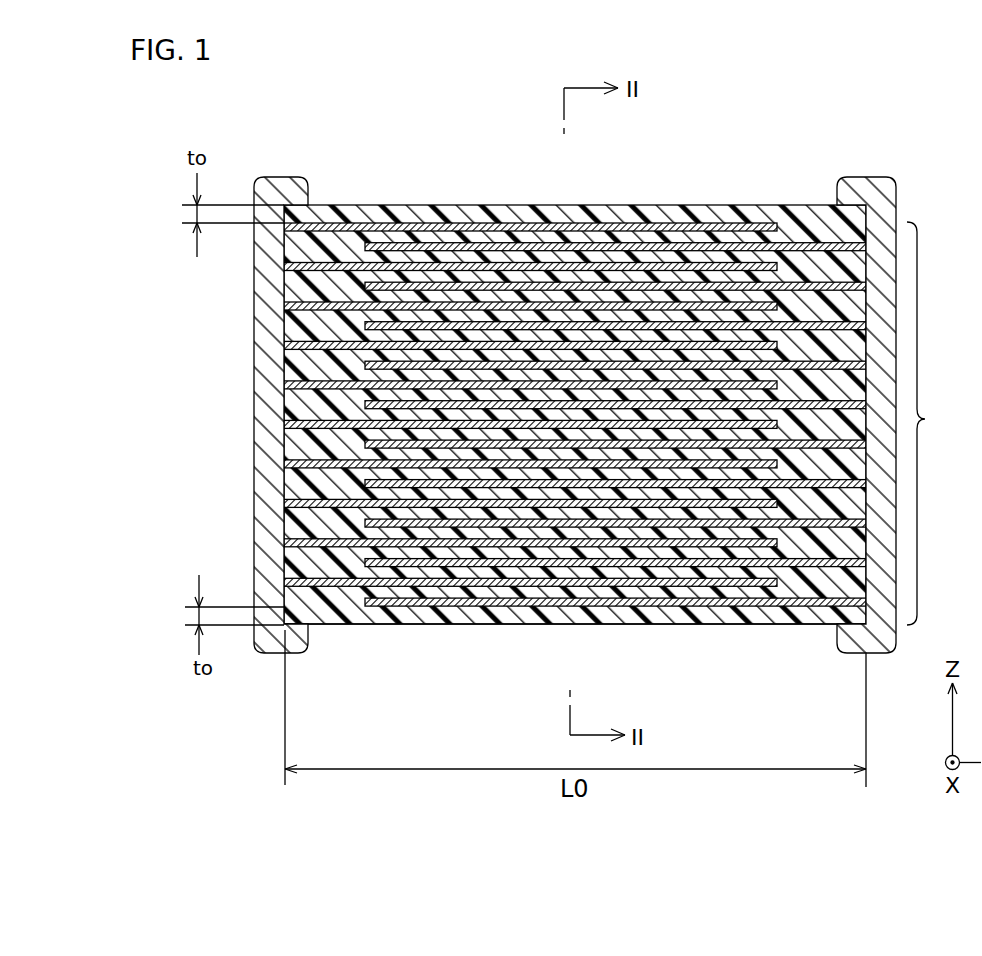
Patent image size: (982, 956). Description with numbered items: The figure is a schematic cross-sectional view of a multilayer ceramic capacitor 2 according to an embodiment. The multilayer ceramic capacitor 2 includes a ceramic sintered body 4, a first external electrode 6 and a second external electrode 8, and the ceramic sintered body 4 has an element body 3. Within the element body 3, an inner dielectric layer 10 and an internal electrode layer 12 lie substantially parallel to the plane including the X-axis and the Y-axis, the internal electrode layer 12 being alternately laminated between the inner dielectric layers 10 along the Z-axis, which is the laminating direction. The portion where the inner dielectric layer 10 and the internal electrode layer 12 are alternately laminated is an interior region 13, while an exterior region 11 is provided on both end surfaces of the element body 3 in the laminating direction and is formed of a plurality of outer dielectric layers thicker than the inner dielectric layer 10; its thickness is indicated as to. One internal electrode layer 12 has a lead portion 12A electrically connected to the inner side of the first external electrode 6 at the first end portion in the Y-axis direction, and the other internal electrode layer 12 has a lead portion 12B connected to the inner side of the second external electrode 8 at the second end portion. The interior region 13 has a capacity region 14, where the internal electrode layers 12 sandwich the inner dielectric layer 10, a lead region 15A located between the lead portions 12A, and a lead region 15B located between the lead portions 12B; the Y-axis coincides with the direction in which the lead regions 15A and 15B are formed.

The multilayer ceramic capacitor 2 is at (569, 428).
The element body 3 is at (569, 419).
The ceramic sintered body 4 is at (710, 628).
The first external electrode 6 is at (270, 503).
The second external electrode 8 is at (867, 180).
The inner dielectric layer 10 is at (518, 224).
The exterior region 11 is at (453, 205).
The internal electrode layer 12 is at (528, 407).
The lead portion 12A is at (337, 205).
The lead portion 12B is at (786, 266).
The interior region 13 is at (934, 423).
The capacity region 14 is at (693, 228).
The lead region 15A is at (306, 247).
The lead region 15B is at (838, 270).